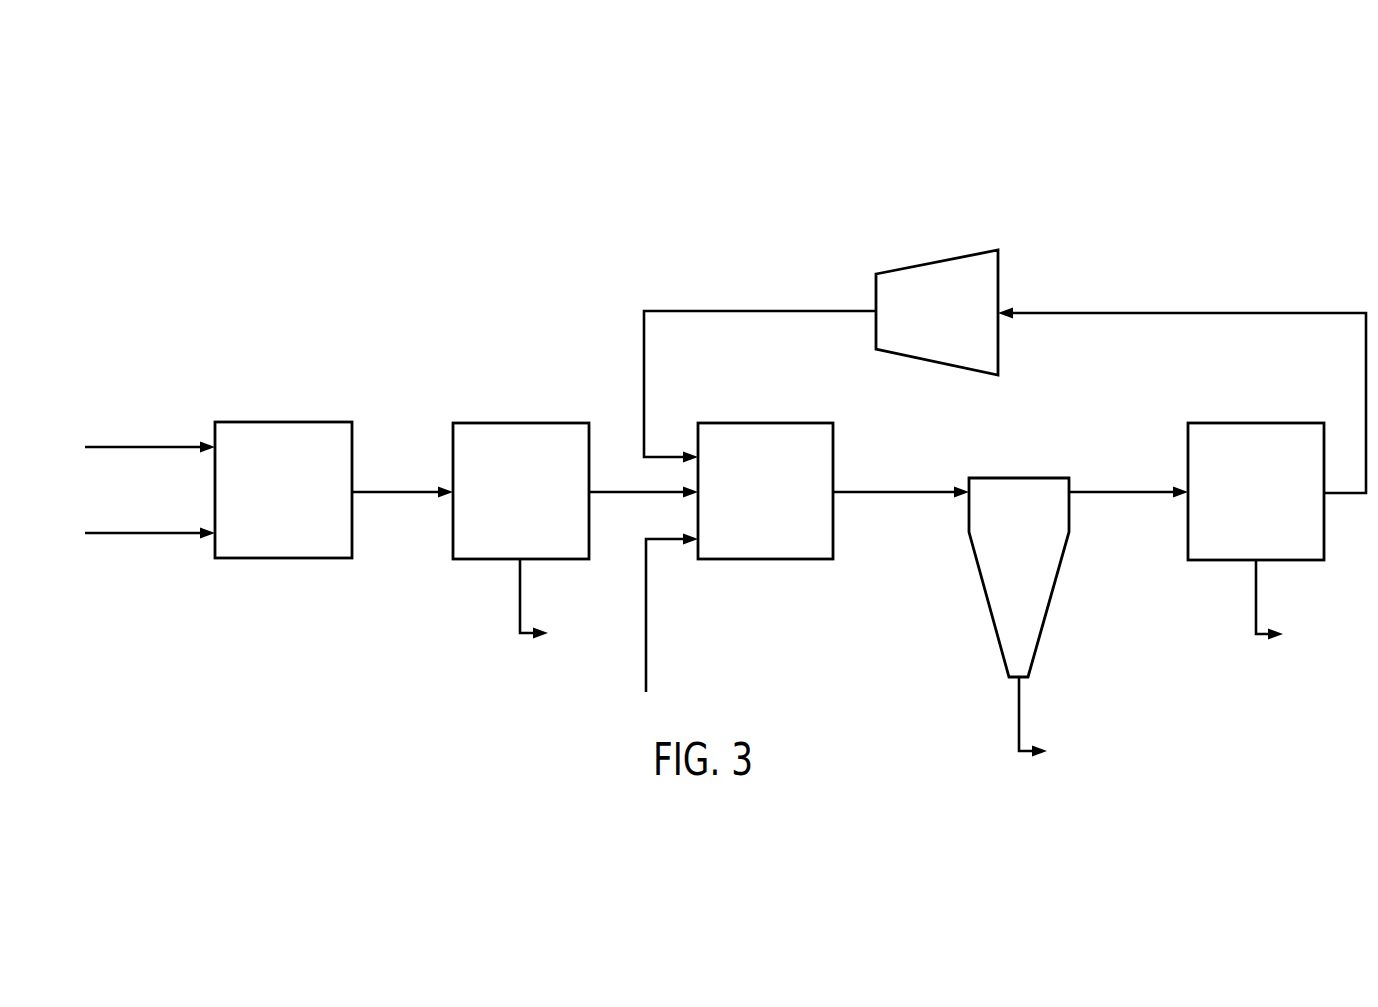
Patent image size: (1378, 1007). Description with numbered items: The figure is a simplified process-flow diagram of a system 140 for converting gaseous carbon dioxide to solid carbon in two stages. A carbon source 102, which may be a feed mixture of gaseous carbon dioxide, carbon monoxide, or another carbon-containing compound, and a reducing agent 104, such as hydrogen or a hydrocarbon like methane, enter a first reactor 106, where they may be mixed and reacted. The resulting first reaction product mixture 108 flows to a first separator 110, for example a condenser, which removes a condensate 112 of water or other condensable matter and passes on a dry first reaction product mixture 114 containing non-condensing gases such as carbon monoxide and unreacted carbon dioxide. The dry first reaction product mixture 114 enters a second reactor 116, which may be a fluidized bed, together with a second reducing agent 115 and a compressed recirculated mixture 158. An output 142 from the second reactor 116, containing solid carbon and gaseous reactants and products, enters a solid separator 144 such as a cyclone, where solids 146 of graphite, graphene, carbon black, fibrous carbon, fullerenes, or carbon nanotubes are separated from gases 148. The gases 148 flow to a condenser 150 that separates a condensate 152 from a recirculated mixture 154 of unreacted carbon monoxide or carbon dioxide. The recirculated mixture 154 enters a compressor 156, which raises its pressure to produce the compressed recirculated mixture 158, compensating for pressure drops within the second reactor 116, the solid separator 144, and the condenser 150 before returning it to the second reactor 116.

The carbon source 102 is at (110, 446).
The reducing agent 104 is at (110, 532).
The first reactor 106 is at (270, 505).
The first reaction product mixture 108 is at (392, 489).
The first separator 110 is at (508, 505).
The condensate 112 is at (523, 612).
The dry first reaction product mixture 114 is at (626, 489).
The second reducing agent 115 is at (646, 660).
The second reactor 116 is at (752, 505).
The system 140 is at (1342, 141).
The output 142 is at (884, 490).
The solid separator 144 is at (1004, 537).
The solids 146 is at (1021, 728).
The gases 148 is at (1114, 490).
The condenser 150 is at (1243, 505).
The condensate 152 is at (1258, 608).
The recirculated mixture 154 is at (1209, 311).
The compressor 156 is at (924, 323).
The compressed recirculated mixture 158 is at (692, 309).